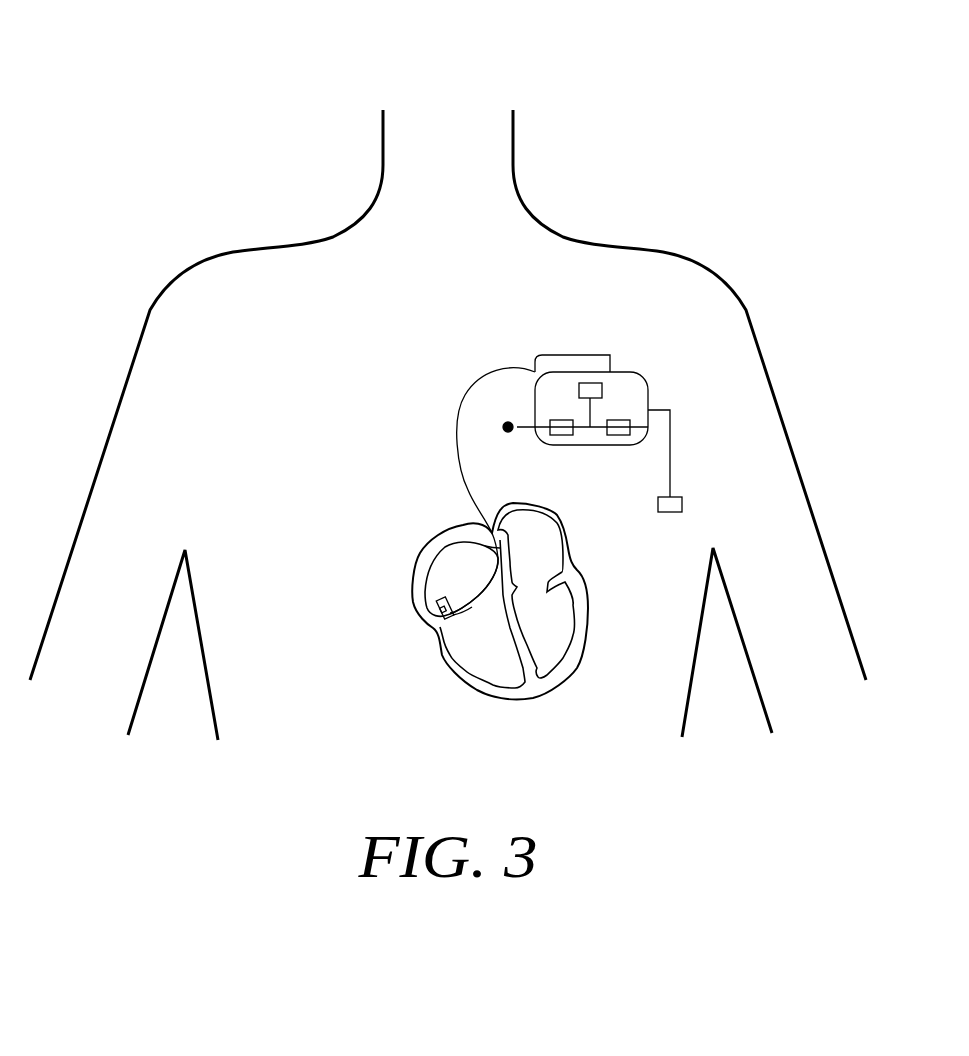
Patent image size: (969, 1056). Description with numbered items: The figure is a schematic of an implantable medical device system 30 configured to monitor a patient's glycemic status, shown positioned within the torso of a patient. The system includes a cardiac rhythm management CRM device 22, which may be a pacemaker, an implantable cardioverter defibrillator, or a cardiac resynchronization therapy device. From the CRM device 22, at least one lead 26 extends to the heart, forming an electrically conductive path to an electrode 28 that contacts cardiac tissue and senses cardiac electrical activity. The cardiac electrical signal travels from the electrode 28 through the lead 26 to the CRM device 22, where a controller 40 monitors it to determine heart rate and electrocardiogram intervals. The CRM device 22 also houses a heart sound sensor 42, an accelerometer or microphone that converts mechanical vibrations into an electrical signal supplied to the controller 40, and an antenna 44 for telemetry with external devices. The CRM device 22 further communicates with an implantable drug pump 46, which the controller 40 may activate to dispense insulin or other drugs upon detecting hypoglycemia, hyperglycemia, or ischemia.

The medical device system 30 is at (800, 92).
The CRM device 22 is at (624, 380).
The lead 26 is at (465, 398).
The electrode 28 is at (436, 602).
The controller 40 is at (563, 436).
The heart sound sensor 42 is at (619, 436).
The antenna 44 is at (518, 434).
The implantable drug pump 46 is at (672, 512).